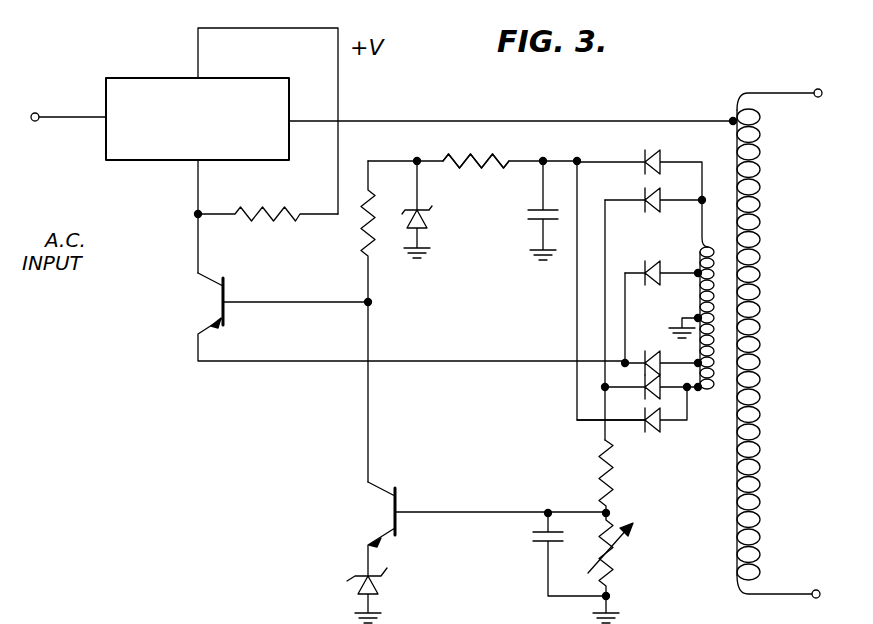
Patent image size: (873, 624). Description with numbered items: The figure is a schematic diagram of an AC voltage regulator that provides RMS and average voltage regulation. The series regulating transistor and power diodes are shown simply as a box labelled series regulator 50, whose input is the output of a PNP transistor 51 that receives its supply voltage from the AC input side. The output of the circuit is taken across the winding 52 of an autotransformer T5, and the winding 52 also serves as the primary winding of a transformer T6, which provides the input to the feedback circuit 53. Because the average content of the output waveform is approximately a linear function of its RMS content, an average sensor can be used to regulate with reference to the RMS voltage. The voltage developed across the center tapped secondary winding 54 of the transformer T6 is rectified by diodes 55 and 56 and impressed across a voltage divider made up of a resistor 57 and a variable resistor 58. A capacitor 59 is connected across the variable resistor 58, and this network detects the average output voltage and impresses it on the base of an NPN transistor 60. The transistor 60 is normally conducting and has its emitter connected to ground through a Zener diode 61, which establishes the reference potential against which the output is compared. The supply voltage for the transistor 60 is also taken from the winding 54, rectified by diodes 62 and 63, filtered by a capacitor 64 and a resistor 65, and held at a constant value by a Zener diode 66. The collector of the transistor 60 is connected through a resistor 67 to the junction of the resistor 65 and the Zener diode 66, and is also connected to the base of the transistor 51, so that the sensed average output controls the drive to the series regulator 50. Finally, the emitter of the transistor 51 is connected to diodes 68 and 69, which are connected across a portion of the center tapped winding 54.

The series regulator 50 is at (291, 89).
The PNP transistor 51 is at (228, 280).
The winding 52 is at (757, 178).
The feedback circuit 53 is at (472, 221).
The secondary winding 54 is at (700, 250).
The diode 55 is at (646, 190).
The diode 56 is at (652, 396).
The resistor 57 is at (597, 453).
The variable resistor 58 is at (612, 568).
The capacitor 59 is at (540, 550).
The NPN transistor 60 is at (400, 497).
The Zener diode 61 is at (383, 584).
The diode 62 is at (655, 152).
The diode 63 is at (660, 426).
The capacitor 64 is at (533, 223).
The resistor 65 is at (505, 155).
The Zener diode 66 is at (431, 203).
The resistor 67 is at (361, 244).
The diode 68 is at (650, 281).
The diode 69 is at (663, 337).
The autotransformer T5 is at (770, 284).
The transformer T6 is at (717, 386).